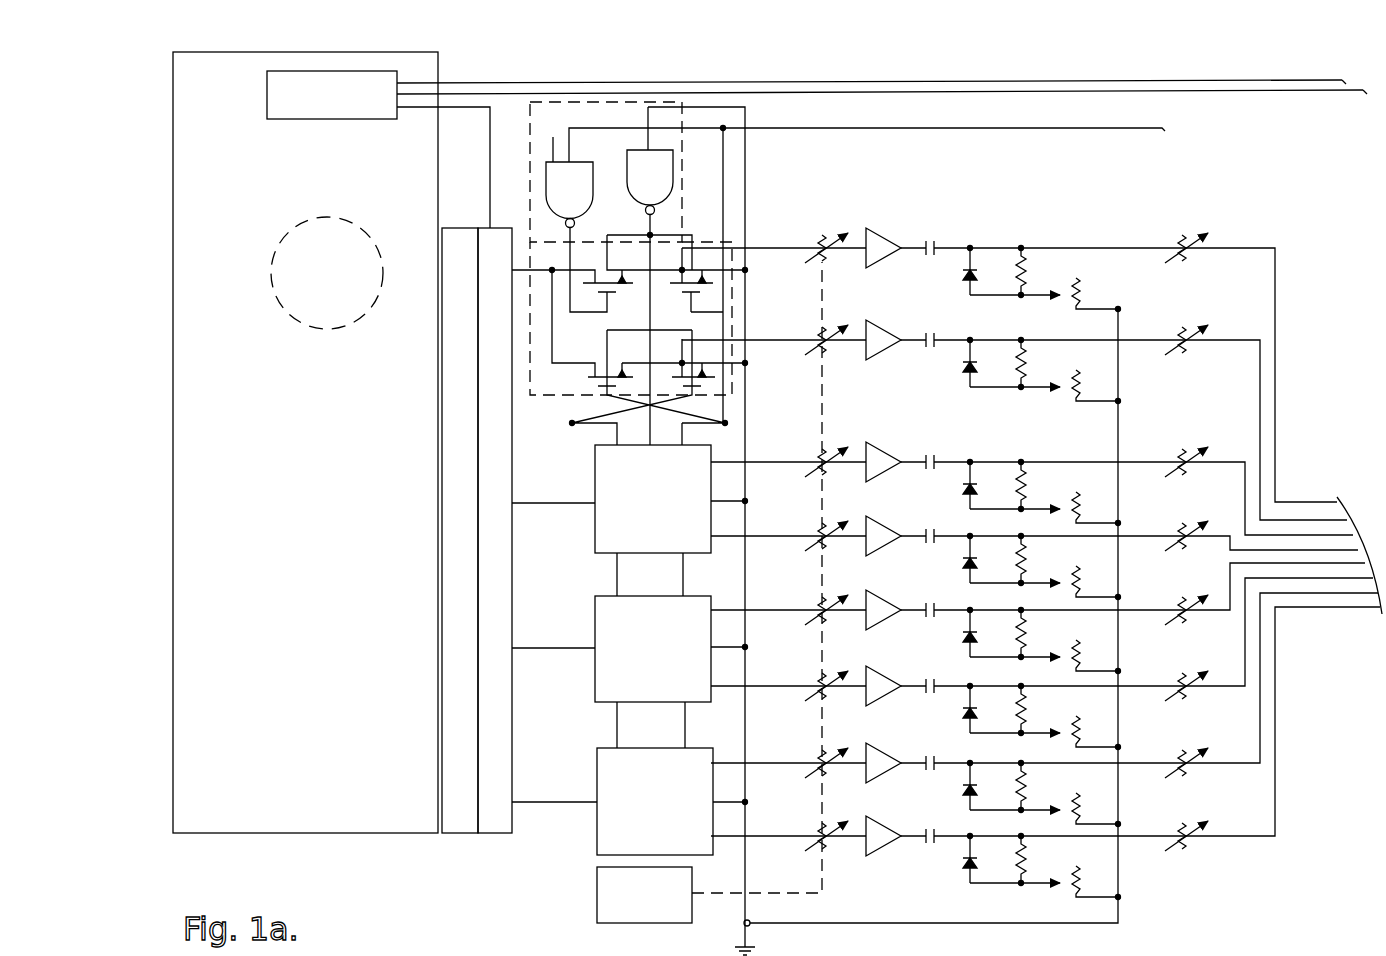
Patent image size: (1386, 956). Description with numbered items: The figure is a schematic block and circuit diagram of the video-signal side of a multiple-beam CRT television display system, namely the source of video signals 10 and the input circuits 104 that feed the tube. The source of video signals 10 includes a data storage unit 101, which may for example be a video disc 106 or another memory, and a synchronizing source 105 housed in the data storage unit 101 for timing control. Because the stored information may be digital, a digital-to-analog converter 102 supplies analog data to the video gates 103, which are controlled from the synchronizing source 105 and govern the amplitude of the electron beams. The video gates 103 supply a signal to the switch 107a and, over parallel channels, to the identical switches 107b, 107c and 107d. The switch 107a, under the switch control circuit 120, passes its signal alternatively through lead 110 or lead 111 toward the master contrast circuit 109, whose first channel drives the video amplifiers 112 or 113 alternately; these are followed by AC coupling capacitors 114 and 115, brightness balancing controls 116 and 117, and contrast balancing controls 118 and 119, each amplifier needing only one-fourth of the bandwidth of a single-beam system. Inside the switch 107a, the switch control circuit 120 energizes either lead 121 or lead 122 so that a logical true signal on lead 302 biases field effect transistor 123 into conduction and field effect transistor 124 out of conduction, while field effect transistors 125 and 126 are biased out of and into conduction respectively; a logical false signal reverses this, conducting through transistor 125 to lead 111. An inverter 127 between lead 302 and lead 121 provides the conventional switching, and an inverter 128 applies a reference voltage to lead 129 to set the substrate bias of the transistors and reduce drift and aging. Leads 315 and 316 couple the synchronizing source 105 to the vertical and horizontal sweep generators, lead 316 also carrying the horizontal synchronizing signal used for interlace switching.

The source of video signals 10 is at (530, 898).
The data storage unit 101 is at (185, 741).
The digital-to-analog (D/A) converter 102 is at (462, 238).
The video gates 103 is at (510, 836).
The input circuits 104 is at (897, 202).
The synchronizing source 105 is at (272, 119).
The video disc 106 is at (277, 306).
The switch 107a is at (660, 286).
The switch 107b is at (630, 520).
The switch 107c is at (630, 672).
The switch 107d is at (630, 801).
The master contrast circuit 109 is at (600, 921).
The lead 110 is at (804, 246).
The lead 111 is at (791, 346).
The video amplifier 112 is at (876, 240).
The video amplifier 113 is at (869, 368).
The AC coupling capacitor 114 is at (925, 256).
The AC coupling capacitor 115 is at (938, 341).
The brightness balancing control 116 is at (1030, 279).
The brightness balancing control 117 is at (1032, 386).
The contrast balancing control 118 is at (1186, 232).
The contrast balancing control 119 is at (1186, 325).
The switch control circuit 120 is at (522, 108).
The lead 121 is at (572, 242).
The lead 122 is at (724, 152).
The field effect transistor 123 is at (630, 291).
The field effect transistor 124 is at (708, 262).
The field effect transistor 125 is at (594, 389).
The field effect transistor 126 is at (712, 376).
The inverter 127 is at (565, 165).
The inverter 128 is at (632, 157).
The lead 129 is at (654, 231).
The lead 302 is at (1000, 127).
The lead 315 is at (962, 82).
The lead 316 is at (1252, 92).